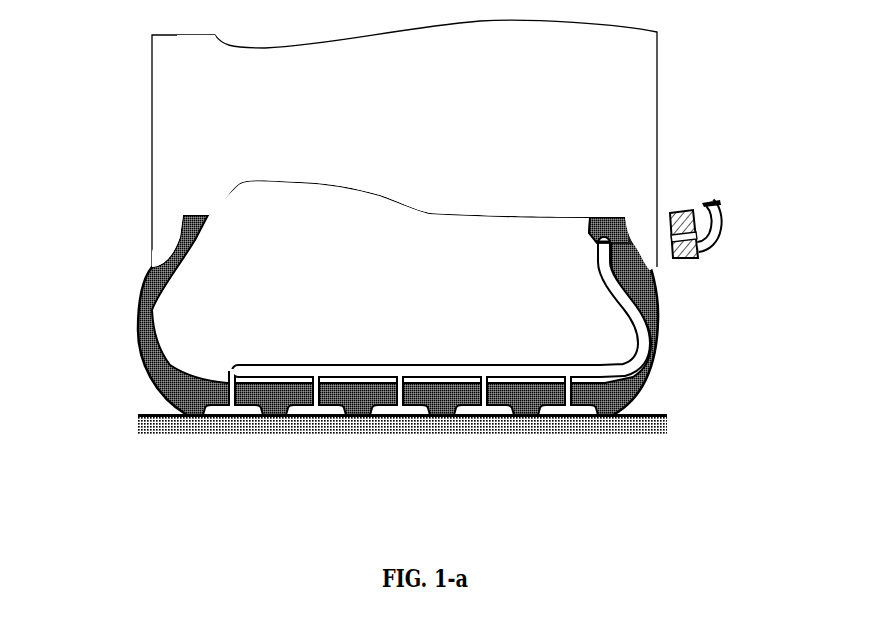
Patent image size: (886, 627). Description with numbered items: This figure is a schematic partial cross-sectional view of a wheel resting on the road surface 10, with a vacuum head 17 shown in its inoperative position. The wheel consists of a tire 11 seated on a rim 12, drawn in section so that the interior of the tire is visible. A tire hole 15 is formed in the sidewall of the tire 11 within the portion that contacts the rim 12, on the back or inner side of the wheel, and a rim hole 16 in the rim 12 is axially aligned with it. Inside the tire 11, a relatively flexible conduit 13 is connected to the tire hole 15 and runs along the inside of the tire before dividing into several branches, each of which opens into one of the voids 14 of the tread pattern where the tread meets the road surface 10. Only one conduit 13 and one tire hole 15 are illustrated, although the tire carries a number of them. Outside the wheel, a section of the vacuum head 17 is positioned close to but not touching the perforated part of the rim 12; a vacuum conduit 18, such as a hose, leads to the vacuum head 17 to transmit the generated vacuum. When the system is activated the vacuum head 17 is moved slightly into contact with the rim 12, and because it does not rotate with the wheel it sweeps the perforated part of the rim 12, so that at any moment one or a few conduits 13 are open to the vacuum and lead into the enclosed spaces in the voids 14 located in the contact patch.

The road surface 10 is at (647, 417).
The tire 11 is at (140, 291).
The rim 12 is at (178, 59).
The conduit 13 is at (447, 377).
The void 14 is at (565, 409).
The tire hole 15 is at (603, 237).
The rim hole 16 is at (645, 232).
The vacuum head 17 is at (698, 249).
The vacuum conduit 18 is at (712, 210).